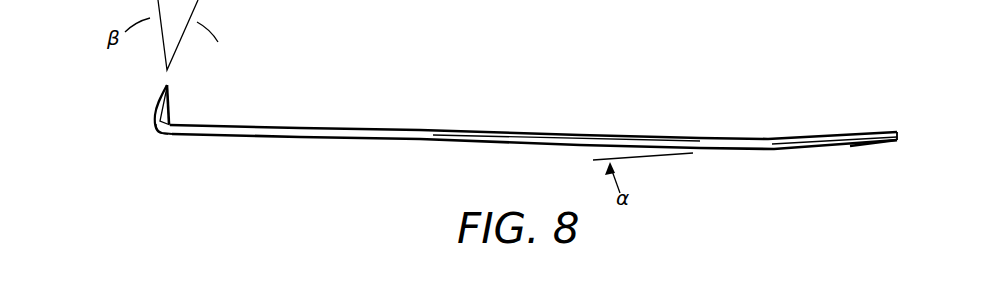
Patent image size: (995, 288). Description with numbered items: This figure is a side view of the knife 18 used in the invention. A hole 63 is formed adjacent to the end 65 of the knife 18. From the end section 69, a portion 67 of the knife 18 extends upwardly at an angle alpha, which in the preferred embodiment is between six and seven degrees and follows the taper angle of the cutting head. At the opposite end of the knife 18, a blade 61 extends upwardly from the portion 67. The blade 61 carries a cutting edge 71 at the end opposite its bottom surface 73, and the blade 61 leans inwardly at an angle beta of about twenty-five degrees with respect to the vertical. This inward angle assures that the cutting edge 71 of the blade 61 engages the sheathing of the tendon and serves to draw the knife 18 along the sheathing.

The knife 18 is at (683, 138).
The blade 61 is at (160, 110).
The hole 63 is at (833, 134).
The end 65 is at (898, 132).
The portion 67 is at (527, 133).
The end section 69 is at (880, 141).
The cutting edge 71 is at (168, 87).
The bottom surface 73 is at (158, 133).